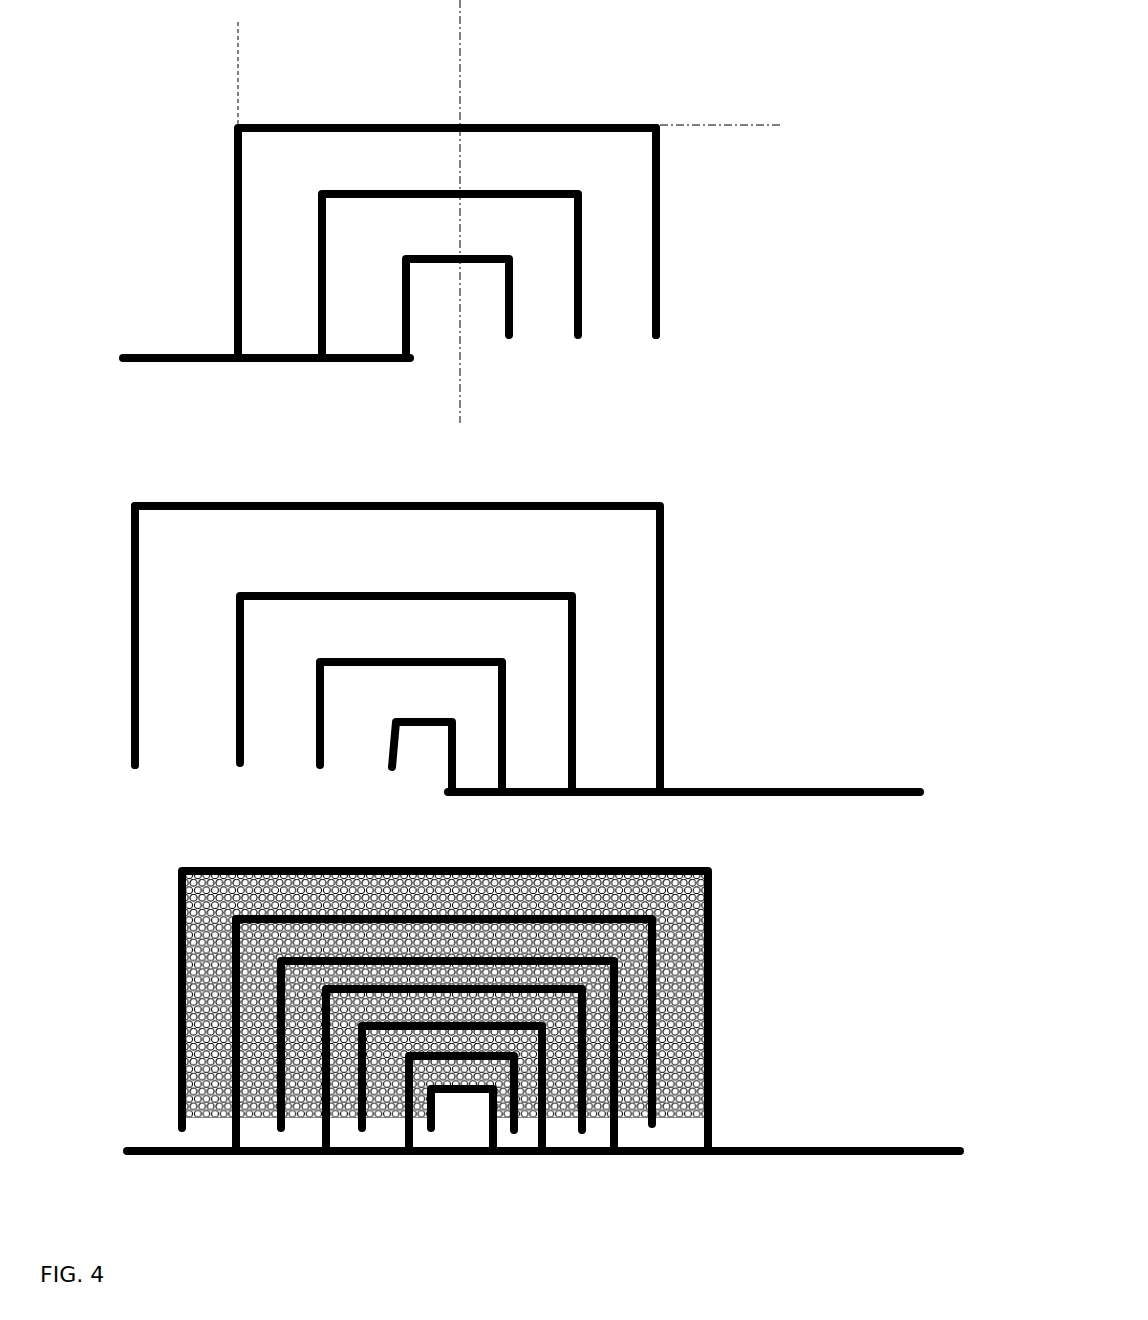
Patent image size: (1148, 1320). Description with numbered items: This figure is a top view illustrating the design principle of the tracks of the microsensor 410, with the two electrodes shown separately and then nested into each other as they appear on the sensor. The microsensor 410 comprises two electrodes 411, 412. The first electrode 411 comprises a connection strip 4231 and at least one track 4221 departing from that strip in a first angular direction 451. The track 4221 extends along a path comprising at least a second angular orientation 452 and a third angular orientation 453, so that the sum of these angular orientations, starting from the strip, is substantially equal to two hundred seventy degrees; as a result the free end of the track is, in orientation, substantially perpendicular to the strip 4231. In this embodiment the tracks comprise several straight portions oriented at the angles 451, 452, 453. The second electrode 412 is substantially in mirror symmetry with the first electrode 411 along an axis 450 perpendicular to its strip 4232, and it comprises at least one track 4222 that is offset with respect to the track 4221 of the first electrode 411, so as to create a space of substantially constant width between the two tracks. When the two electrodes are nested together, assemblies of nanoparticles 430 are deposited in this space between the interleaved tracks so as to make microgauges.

The microsensor 410 is at (745, 953).
The first electrode 411 is at (588, 94).
The second electrode 412 is at (695, 597).
The track of the first electrode 4221 is at (736, 231).
The track of the second electrode 4222 is at (89, 635).
The connection strip of the first electrode 4231 is at (288, 754).
The connection strip of the second electrode 4232 is at (704, 958).
The assemblies of nanoparticles 430 is at (207, 1118).
The axis 450 is at (459, 340).
The first angular direction 451 is at (238, 279).
The second angular orientation 452 is at (300, 124).
The third angular orientation 453 is at (722, 126).